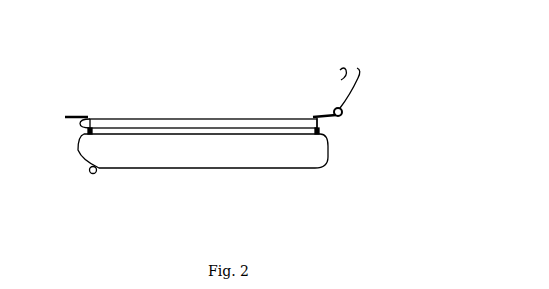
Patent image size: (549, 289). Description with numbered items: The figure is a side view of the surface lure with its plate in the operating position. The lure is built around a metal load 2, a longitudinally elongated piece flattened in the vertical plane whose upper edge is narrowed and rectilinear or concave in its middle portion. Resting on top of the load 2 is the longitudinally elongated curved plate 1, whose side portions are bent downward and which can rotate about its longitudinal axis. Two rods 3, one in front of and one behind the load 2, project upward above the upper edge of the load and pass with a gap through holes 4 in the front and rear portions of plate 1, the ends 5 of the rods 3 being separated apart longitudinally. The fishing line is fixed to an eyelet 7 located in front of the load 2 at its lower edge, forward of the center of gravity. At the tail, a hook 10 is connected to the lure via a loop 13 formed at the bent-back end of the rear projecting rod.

The longitudinally elongated curved plate 1 is at (155, 127).
The metal load 2 is at (204, 153).
The rods 3 is at (87, 131).
The holes 4 is at (90, 118).
The ends of rods 5 is at (75, 115).
The eyelet 7 is at (91, 173).
The hook 10 is at (339, 108).
The loop 13 is at (343, 112).